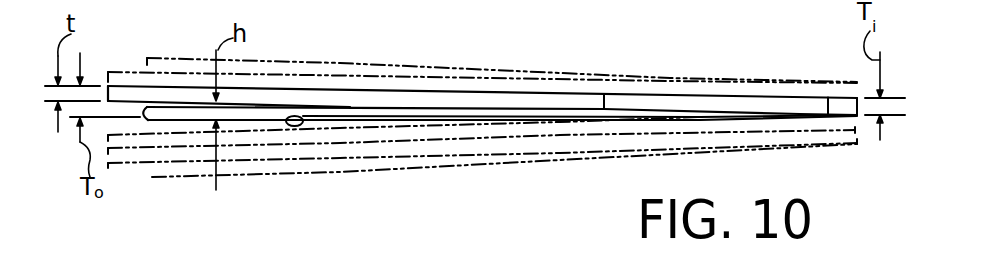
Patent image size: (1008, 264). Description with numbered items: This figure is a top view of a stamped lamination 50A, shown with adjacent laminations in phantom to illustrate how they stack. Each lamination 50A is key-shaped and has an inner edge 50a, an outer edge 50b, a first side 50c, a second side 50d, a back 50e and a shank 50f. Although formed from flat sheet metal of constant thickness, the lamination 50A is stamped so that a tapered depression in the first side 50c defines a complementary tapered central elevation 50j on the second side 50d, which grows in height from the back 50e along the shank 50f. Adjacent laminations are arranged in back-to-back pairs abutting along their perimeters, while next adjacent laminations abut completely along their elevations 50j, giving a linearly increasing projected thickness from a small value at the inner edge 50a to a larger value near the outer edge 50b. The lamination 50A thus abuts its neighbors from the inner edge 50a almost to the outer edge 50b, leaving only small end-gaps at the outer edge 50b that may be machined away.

The lamination 50A is at (538, 93).
The inner edge 50a is at (859, 103).
The outer edge 50b is at (107, 90).
The first side 50c is at (363, 92).
The second side 50d is at (370, 121).
The back 50e is at (674, 104).
The shank 50f is at (467, 98).
The central elevation 50j is at (289, 113).